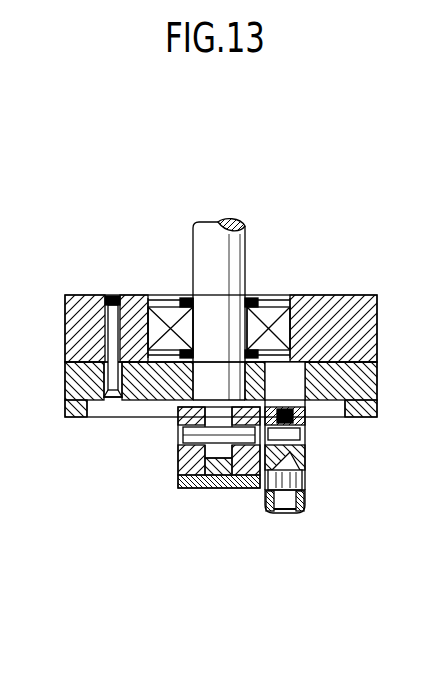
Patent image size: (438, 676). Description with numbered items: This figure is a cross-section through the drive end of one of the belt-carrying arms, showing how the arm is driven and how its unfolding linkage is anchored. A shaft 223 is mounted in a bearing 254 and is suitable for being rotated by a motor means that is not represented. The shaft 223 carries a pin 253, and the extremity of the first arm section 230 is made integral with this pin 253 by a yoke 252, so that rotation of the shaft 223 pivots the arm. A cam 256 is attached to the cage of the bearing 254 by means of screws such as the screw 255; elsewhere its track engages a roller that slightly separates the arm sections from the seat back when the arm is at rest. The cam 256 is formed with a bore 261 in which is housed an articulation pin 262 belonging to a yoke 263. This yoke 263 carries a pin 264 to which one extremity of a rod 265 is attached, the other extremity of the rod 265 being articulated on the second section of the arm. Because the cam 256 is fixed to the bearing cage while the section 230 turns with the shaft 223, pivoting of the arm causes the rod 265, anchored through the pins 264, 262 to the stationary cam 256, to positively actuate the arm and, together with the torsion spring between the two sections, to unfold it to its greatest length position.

The shaft 223 is at (245, 248).
The section 230 is at (205, 489).
The yoke 252 is at (178, 462).
The pin 253 is at (178, 437).
The bearing 254 is at (78, 295).
The screw 255 is at (112, 398).
The cam 256 is at (75, 388).
The bore 261 is at (306, 382).
The articulation pin 262 is at (308, 420).
The yoke 263 is at (310, 462).
The pin 264 is at (305, 440).
The rod 265 is at (265, 497).